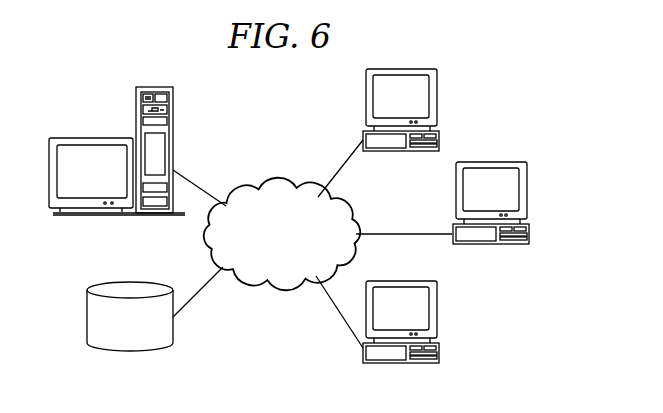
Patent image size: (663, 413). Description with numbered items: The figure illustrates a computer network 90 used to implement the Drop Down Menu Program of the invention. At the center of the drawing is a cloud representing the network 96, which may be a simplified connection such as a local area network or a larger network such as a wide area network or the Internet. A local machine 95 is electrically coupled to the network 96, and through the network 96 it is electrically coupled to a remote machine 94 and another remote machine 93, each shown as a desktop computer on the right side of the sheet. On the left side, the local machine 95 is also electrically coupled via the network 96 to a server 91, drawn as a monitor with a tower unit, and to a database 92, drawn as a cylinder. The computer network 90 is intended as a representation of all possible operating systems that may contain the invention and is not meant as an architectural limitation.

The computer network 90 is at (178, 48).
The server 91 is at (95, 137).
The database 92 is at (87, 315).
The remote machine 93 is at (437, 310).
The remote machine 94 is at (527, 192).
The local machine 95 is at (437, 98).
The network 96 is at (293, 249).